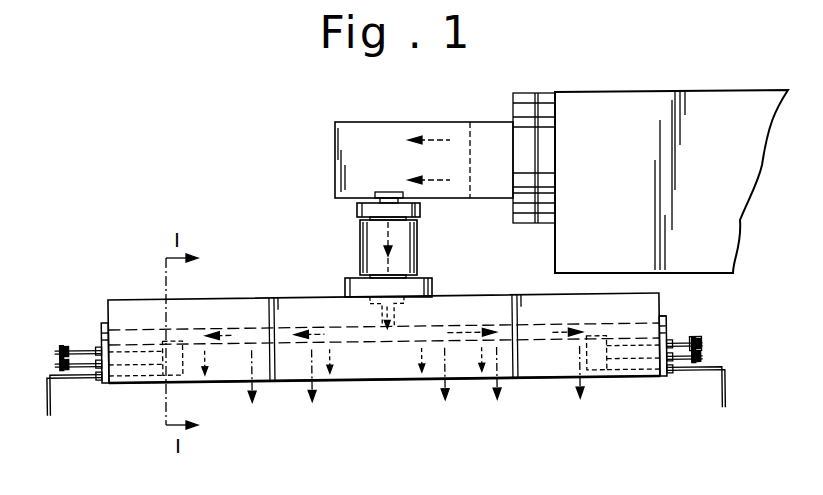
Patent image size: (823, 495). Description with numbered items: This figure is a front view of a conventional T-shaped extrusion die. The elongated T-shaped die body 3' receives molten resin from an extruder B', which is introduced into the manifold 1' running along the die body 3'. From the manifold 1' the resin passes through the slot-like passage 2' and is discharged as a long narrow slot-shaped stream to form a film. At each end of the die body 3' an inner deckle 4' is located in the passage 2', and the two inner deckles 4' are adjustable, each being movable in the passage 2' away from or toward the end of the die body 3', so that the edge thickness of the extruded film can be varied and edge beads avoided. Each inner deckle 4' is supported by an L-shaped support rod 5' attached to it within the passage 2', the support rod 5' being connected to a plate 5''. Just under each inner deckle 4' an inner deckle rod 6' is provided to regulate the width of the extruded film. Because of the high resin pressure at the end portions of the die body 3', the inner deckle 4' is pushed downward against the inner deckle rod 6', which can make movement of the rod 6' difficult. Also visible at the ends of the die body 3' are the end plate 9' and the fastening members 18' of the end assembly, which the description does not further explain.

The manifold 1' is at (384, 358).
The slot-like passage 2' is at (393, 385).
The T-shaped die body 3' is at (384, 309).
The inner deckle 4' is at (384, 381).
The L-shaped support rod 5' is at (677, 314).
The plate 5'' is at (722, 330).
The inner deckle rod 6' is at (407, 390).
The end plate 9' is at (384, 373).
The fastening bolt 18' is at (386, 383).
The extruder B' is at (671, 151).